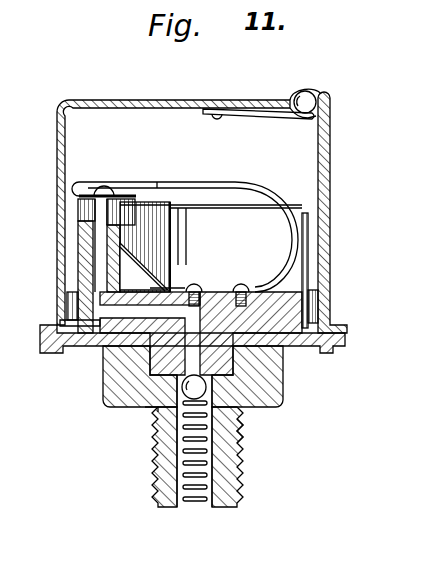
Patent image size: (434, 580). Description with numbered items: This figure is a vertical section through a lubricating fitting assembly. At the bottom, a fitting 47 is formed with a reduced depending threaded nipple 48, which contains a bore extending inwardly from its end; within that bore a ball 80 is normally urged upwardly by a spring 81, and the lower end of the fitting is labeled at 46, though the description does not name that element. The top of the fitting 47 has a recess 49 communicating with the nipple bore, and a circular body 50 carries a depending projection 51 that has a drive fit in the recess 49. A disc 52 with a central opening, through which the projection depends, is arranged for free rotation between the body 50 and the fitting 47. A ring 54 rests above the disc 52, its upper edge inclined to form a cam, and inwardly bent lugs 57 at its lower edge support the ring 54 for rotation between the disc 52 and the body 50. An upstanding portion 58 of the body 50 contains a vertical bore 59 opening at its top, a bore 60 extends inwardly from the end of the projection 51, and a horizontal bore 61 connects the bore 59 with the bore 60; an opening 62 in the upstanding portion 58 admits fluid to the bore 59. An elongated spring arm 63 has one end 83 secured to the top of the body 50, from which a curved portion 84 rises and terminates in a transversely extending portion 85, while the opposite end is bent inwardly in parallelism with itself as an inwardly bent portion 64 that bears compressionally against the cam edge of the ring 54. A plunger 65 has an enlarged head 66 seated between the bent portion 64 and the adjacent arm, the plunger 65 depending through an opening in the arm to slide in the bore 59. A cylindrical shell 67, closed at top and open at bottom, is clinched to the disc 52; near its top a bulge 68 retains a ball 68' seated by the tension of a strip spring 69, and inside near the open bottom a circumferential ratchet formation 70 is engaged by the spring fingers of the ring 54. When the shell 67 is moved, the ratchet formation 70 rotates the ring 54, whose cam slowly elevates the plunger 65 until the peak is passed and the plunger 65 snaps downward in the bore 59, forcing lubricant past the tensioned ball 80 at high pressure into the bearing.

The terminal bore 46 is at (200, 492).
The fitting 47 is at (279, 387).
The threaded nipple 48 is at (241, 455).
The recess 49 is at (243, 420).
The circular body 50 is at (222, 293).
The depending projection 51 is at (157, 408).
The disc 52 is at (80, 347).
The ring 54 is at (190, 212).
The inwardly bent lugs 57 is at (292, 347).
The upstanding portion 58 is at (135, 243).
The vertical bore 59 is at (103, 306).
The bore 60 is at (196, 290).
The horizontal bore 61 is at (172, 290).
The opening 62 is at (88, 302).
The spring arm 63 is at (242, 181).
The inwardly bent portion 64 is at (138, 195).
The plunger 65 is at (93, 222).
The enlarged head 66 is at (106, 188).
The shell 67 is at (330, 196).
The bulge 68 is at (336, 98).
The ball 68' is at (324, 78).
The strip spring 69 is at (270, 117).
The ratchet formation 70 is at (318, 306).
The ball 80 is at (165, 410).
The spring 81 is at (205, 480).
The secured end 83 is at (230, 293).
The curved portion 84 is at (290, 188).
The transversely extending portion 85 is at (160, 175).